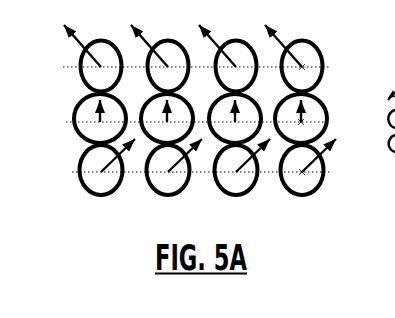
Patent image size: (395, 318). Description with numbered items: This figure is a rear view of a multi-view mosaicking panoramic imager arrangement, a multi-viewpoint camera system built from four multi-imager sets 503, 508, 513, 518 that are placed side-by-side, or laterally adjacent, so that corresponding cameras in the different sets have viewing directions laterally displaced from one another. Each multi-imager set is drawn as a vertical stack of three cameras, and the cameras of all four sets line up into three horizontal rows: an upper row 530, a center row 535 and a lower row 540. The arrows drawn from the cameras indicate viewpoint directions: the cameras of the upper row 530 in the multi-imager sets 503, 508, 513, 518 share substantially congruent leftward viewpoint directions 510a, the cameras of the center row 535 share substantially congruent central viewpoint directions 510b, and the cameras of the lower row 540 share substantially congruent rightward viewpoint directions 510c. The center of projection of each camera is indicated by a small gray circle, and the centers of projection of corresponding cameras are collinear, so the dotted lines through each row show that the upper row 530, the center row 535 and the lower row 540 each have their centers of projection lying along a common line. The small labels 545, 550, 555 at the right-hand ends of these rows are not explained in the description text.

The leftward viewpoint directions 510a is at (97, 64).
The second row of magnets 510b is at (94, 118).
The third row of magnets 510c is at (95, 170).
The upper row 530 is at (72, 61).
The center row 535 is at (71, 116).
The lower row 540 is at (72, 166).
The multi-imager set 503 is at (102, 199).
The multi-imager set 508 is at (170, 199).
The multi-imager set 513 is at (239, 199).
The multi-imager set 518 is at (306, 199).
The first row label 545 is at (329, 68).
The second row label 550 is at (330, 122).
The third row label 555 is at (330, 172).